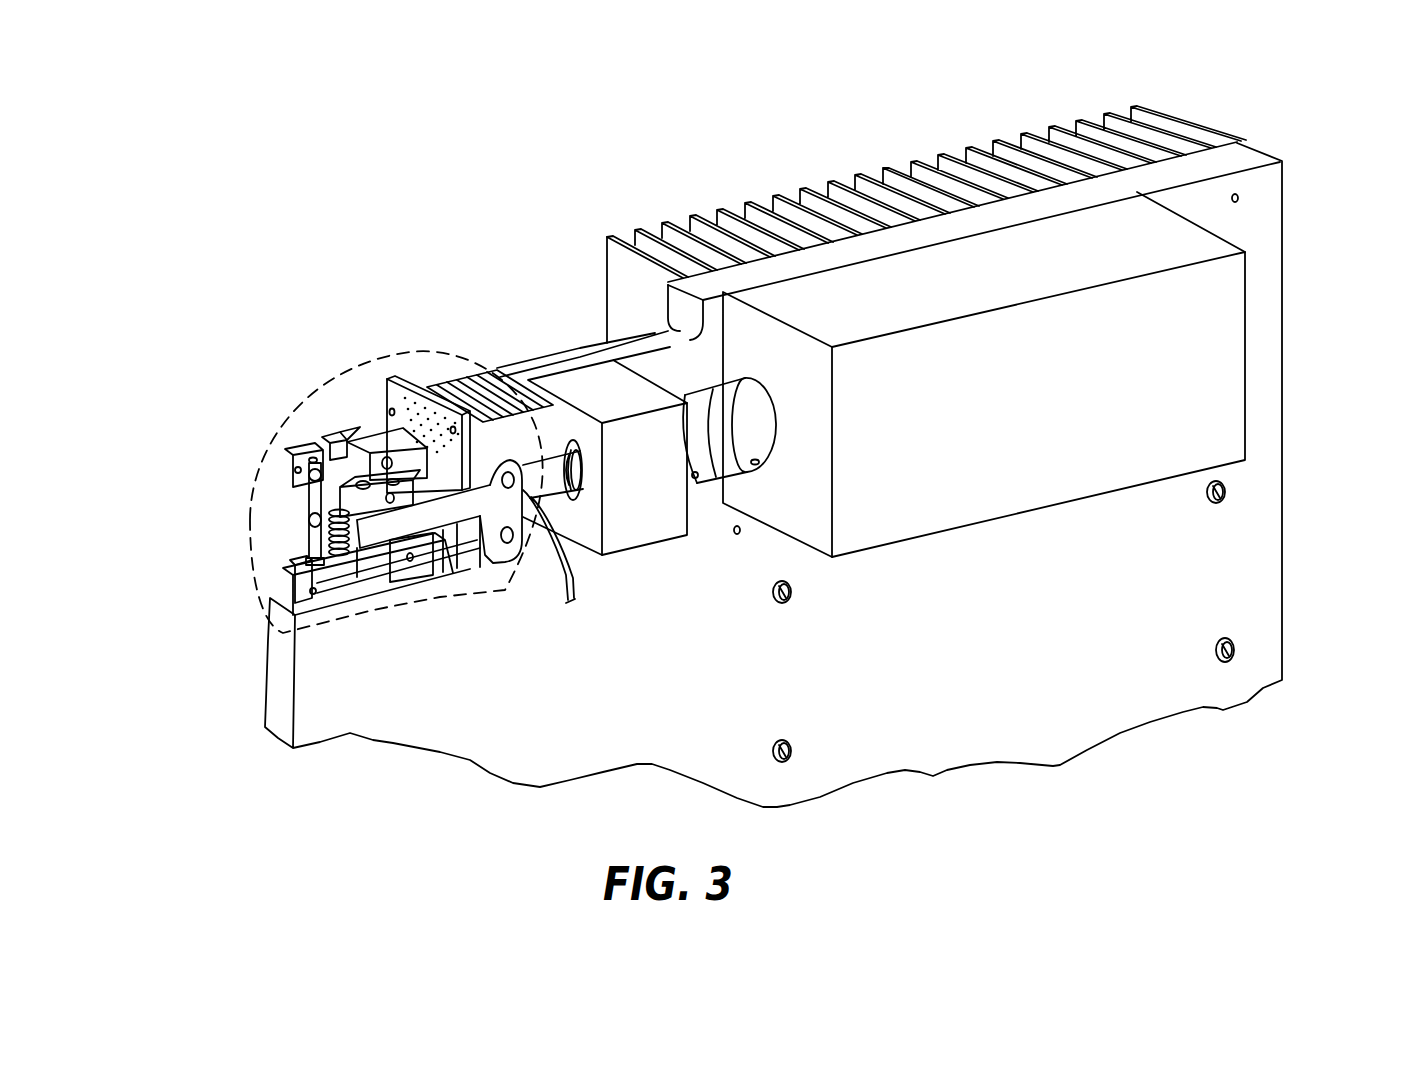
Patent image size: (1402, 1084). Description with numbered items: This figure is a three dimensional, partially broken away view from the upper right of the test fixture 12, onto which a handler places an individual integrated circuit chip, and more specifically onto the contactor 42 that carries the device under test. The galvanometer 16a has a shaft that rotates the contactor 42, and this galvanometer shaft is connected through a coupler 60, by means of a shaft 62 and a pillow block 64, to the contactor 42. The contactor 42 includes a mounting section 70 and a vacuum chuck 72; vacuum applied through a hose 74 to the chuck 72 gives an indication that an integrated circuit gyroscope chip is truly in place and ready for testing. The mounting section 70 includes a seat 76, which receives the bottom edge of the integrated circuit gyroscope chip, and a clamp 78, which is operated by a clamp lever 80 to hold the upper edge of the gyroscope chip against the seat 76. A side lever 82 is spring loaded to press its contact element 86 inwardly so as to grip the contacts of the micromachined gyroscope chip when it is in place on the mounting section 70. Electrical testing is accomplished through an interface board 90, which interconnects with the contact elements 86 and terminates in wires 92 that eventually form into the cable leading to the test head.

The test fixture 12 is at (418, 600).
The galvanometer 16a is at (1225, 303).
The contactor 42 is at (265, 397).
The coupler 60 is at (760, 437).
The shaft 62 is at (563, 447).
The pillow block 64 is at (657, 522).
The mounting section 70 is at (310, 518).
The vacuum chuck 72 is at (307, 525).
The hose 74 is at (572, 585).
The seat 76 is at (292, 547).
The clamp 78 is at (308, 493).
The clamp lever 80 is at (380, 432).
The side lever 82 is at (462, 508).
The contact element 86 is at (335, 560).
The interface board 90 is at (390, 378).
The wires 92 is at (470, 390).